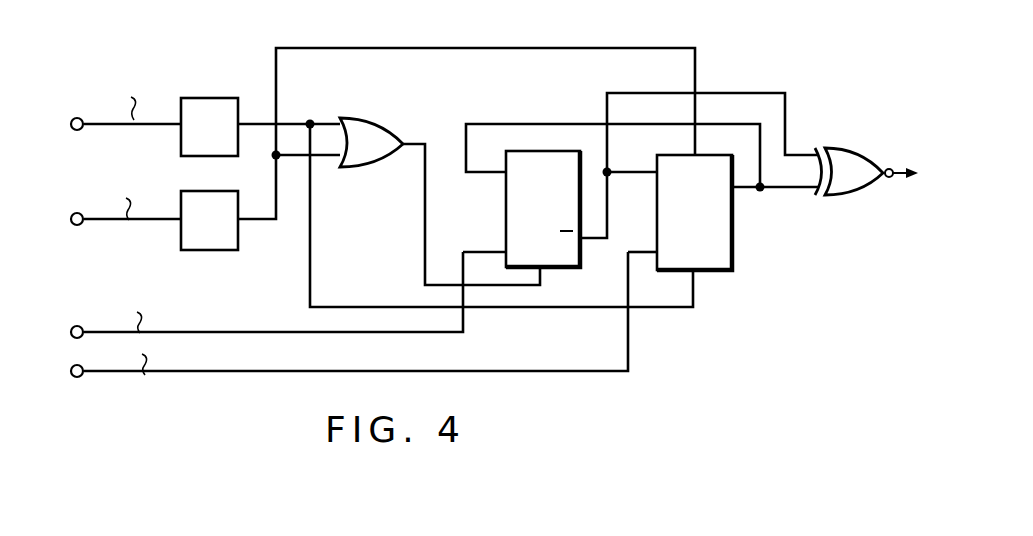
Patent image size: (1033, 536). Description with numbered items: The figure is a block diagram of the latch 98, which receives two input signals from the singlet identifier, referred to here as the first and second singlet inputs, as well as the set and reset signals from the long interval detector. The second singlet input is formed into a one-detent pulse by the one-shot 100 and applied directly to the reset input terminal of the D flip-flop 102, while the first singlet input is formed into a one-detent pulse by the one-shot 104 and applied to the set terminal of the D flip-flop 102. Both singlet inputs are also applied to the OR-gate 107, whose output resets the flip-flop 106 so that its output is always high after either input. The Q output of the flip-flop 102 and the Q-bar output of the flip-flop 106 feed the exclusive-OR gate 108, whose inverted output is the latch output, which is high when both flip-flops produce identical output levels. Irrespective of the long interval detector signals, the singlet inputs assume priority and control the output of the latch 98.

The latch 98 is at (164, 46).
The one-shot 100 is at (203, 98).
The one-shot 104 is at (210, 251).
The OR-gate 107 is at (367, 118).
The flip-flop 106 is at (506, 210).
The D flip-flop 102 is at (735, 223).
The exclusive-OR gate 108 is at (835, 196).